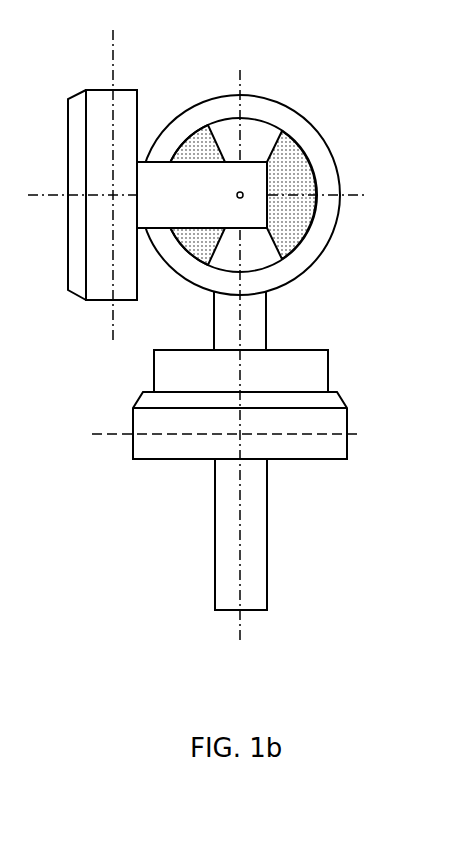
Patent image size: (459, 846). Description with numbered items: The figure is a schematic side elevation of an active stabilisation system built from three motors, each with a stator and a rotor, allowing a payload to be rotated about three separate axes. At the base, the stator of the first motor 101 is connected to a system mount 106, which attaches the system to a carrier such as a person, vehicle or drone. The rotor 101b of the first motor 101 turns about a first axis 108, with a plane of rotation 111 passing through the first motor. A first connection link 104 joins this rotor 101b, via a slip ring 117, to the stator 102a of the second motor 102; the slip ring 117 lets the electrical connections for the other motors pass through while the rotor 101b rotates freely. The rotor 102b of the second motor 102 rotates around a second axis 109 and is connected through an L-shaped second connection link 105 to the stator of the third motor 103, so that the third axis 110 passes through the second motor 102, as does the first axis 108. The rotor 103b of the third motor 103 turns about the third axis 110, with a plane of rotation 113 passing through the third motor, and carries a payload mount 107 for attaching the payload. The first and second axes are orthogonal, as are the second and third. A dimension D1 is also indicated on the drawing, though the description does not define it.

The first motor 101 is at (193, 448).
The rotor of the first motor 101b is at (167, 450).
The second motor 102 is at (269, 185).
The stator of the second motor 102a is at (298, 155).
The rotor of the second motor 102b is at (209, 100).
The third motor 103 is at (94, 186).
The rotor of the third motor 103b is at (100, 293).
The first connection link 104 is at (266, 322).
The second connection link 105 is at (213, 226).
The system mount 106 is at (225, 537).
The payload mount 107 is at (78, 215).
The first axis 108 is at (240, 630).
The second axis 109 is at (244, 197).
The third axis 110 is at (43, 193).
The plane of rotation 111 is at (98, 436).
The plane of rotation 113 is at (112, 50).
The slip ring 117 is at (328, 357).
The diameter D1 is at (13, 374).